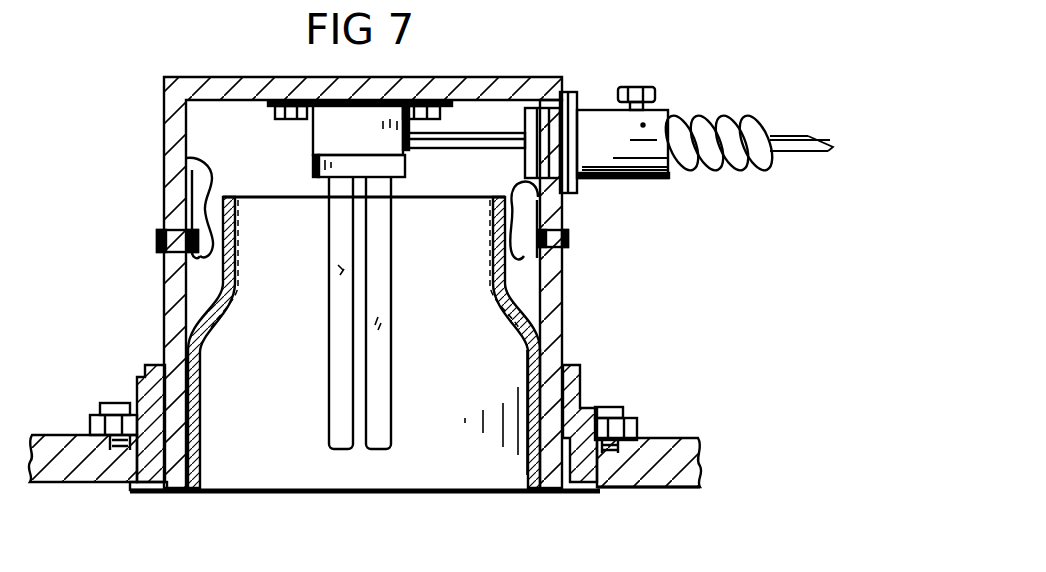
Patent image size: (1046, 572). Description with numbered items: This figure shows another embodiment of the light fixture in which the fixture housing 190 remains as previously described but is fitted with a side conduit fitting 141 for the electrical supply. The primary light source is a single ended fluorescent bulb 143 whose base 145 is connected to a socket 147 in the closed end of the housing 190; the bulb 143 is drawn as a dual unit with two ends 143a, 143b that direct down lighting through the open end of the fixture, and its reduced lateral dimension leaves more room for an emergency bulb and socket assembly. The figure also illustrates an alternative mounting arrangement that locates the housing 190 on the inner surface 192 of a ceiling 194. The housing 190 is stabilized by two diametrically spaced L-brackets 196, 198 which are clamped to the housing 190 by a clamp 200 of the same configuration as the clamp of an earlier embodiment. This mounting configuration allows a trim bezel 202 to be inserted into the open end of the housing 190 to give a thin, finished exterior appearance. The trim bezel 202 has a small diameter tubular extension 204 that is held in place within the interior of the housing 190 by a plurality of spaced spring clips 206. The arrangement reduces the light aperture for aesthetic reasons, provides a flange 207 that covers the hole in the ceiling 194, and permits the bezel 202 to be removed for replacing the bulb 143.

The side conduit fitting 141 is at (600, 126).
The single ended fluorescent bulb 143 is at (371, 355).
The bulb end 143a is at (340, 452).
The bulb end 143b is at (382, 452).
The base 145 is at (410, 165).
The socket 147 is at (320, 138).
The housing 190 is at (172, 292).
The inner surface 192 is at (668, 438).
The ceiling 194 is at (660, 487).
The L-bracket 196 is at (141, 368).
The L-bracket 198 is at (582, 368).
The clamp 200 is at (596, 390).
The trim bezel 202 is at (364, 342).
The tubular extension 204 is at (244, 268).
The spring clip 206 is at (186, 158).
The flange 207 is at (146, 490).